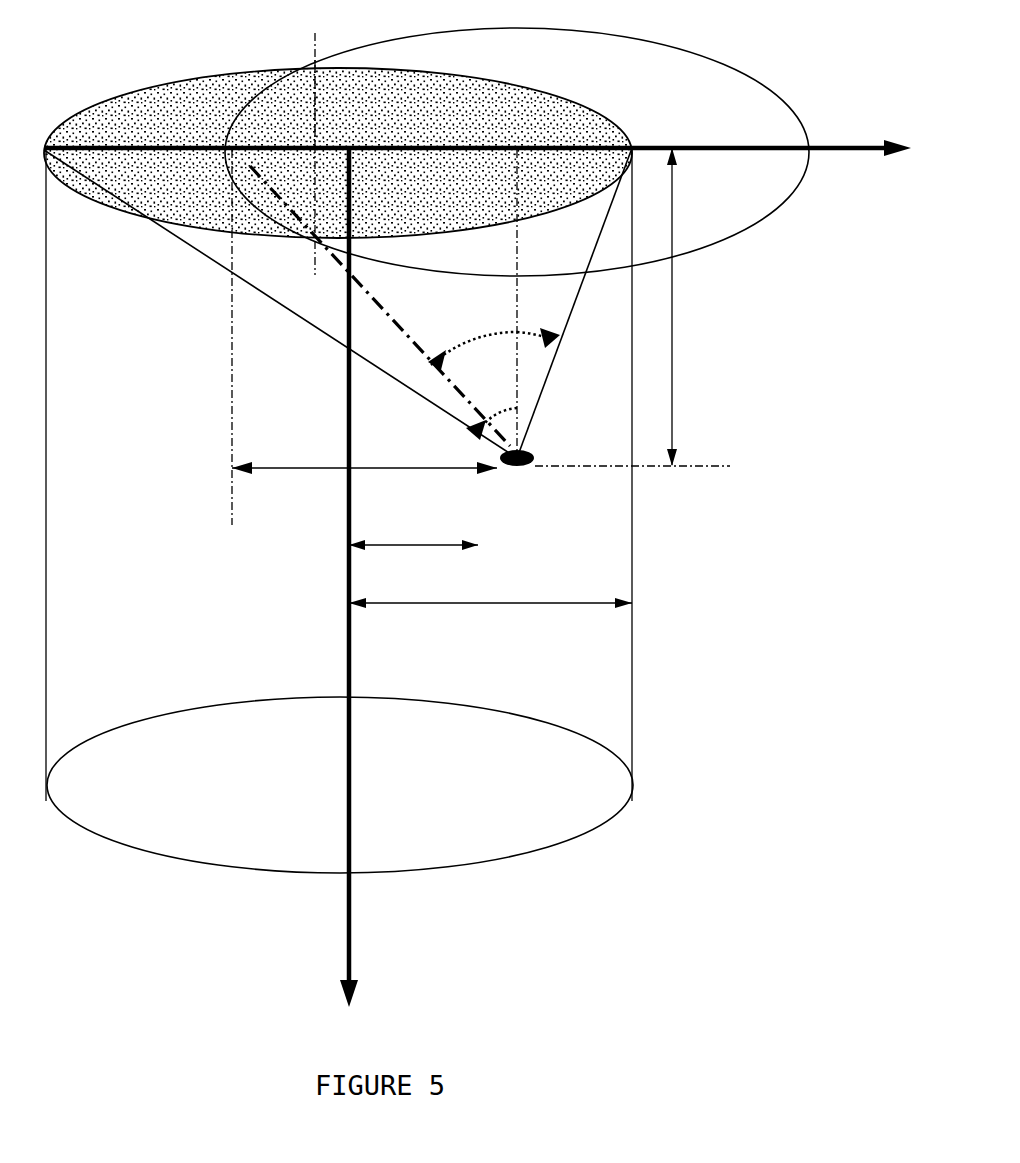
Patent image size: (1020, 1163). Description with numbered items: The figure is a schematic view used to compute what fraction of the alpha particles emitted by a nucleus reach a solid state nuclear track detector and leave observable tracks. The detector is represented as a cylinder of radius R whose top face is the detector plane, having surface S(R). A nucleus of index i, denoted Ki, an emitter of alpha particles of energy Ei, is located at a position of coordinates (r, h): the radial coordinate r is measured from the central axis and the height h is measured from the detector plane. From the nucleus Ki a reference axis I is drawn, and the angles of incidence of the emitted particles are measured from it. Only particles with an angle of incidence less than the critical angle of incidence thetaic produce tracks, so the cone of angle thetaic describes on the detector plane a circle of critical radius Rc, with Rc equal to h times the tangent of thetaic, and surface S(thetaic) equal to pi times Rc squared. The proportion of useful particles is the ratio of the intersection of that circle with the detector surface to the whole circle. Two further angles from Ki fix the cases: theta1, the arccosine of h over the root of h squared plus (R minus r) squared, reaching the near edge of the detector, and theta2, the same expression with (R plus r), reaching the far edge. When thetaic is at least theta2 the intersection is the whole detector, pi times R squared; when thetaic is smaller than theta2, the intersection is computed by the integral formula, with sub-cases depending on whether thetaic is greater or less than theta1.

The radial coordinate r is at (477, 332).
The height coordinate h is at (523, 577).
The radius of SSNTD R is at (490, 625).
The critical radius Rc is at (364, 492).
The axis of incidence I is at (303, 105).
The nucleus of index i Ki is at (524, 486).
The critical angle of incidence thetaic is at (470, 341).
The angle theta 1 theta1 is at (538, 315).
The angle theta 2 theta2 is at (489, 406).